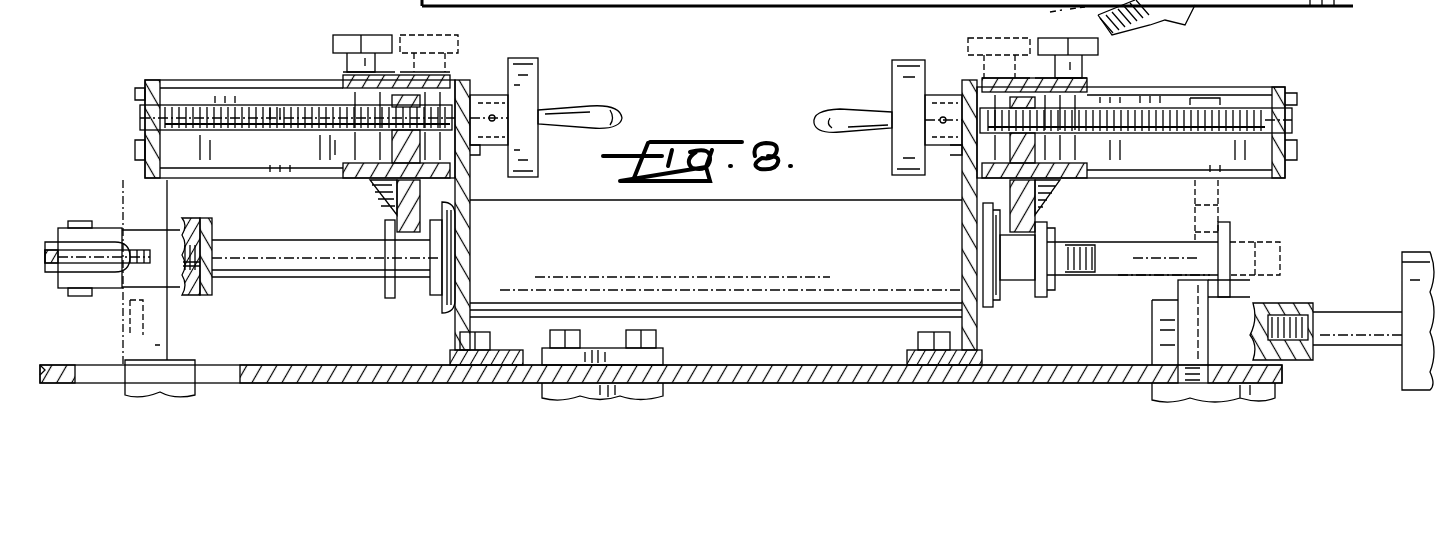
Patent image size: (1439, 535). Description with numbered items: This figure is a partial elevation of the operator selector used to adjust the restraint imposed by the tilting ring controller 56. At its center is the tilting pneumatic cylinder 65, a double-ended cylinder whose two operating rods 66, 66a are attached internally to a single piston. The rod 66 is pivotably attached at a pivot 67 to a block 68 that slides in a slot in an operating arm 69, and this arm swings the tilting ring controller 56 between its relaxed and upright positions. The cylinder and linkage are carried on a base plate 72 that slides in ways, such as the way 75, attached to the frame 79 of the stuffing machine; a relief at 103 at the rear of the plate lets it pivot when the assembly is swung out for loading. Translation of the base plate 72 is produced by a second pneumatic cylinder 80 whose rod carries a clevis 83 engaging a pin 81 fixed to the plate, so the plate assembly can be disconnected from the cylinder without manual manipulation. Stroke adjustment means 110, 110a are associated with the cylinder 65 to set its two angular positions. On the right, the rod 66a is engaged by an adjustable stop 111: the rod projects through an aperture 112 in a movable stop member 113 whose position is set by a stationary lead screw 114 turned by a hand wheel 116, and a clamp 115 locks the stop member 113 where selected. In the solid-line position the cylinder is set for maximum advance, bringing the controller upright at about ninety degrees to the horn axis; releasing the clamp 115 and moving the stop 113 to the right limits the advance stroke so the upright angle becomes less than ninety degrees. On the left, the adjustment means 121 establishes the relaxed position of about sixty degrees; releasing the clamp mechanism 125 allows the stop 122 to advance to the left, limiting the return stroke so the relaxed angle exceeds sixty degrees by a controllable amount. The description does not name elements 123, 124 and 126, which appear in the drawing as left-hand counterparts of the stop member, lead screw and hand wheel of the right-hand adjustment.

The tilting ring controller 56 is at (172, 318).
The pneumatic cylinder 65 is at (756, 246).
The operating rod 66 is at (293, 275).
The operating rod 66a is at (1025, 277).
The pivot 67 is at (88, 222).
The block 68 is at (60, 278).
The operating arm 69 is at (60, 258).
The base plate 72 is at (778, 364).
The way 75 is at (664, 352).
The frame 79 is at (752, 8).
The pneumatic cylinder 80 is at (1415, 252).
The pin 81 is at (1185, 315).
The clevis 83 is at (1270, 303).
The relief 103 is at (826, 0).
The stroke adjustment means 110 is at (262, 56).
The stroke adjustment means 110a is at (1210, 78).
The adjustable stop 111 is at (1060, 238).
The aperture 112 is at (1020, 236).
The movable stop member 113 is at (1030, 210).
The stationary lead screw 114 is at (1252, 116).
The clamp 115 is at (1087, 82).
The hand wheel 116 is at (840, 112).
The adjustment means 121 is at (356, 194).
The stop 122 is at (436, 232).
The support bracket 123 is at (396, 212).
The feed screw 124 is at (200, 105).
The clamp mechanism 125 is at (345, 35).
The handle 126 is at (588, 107).